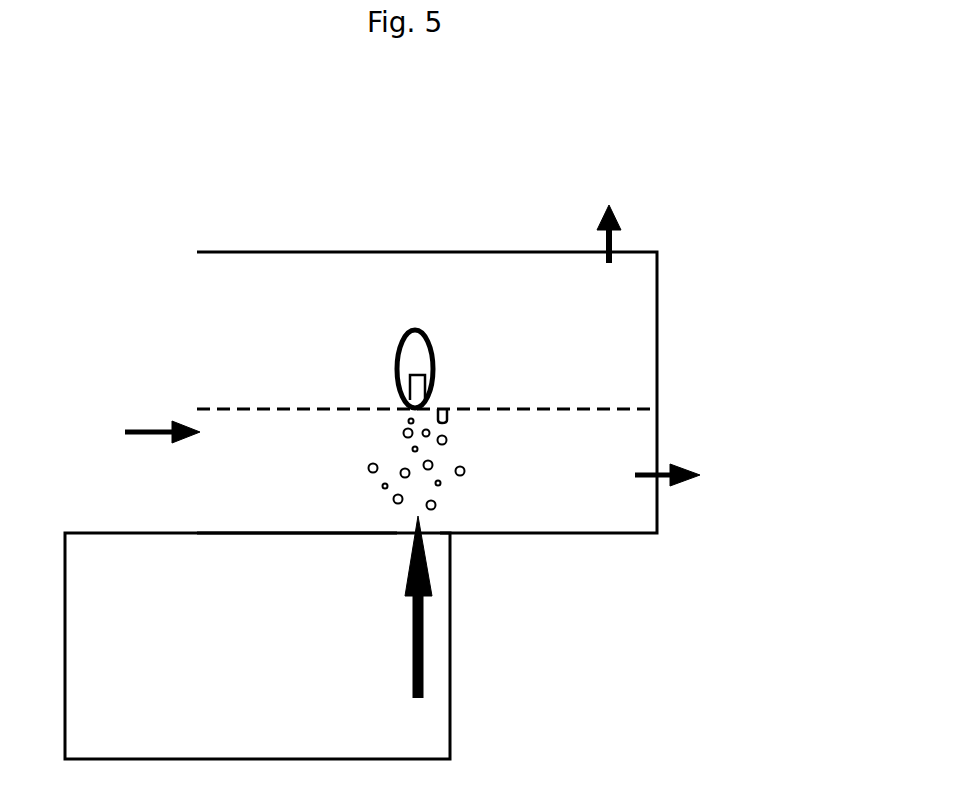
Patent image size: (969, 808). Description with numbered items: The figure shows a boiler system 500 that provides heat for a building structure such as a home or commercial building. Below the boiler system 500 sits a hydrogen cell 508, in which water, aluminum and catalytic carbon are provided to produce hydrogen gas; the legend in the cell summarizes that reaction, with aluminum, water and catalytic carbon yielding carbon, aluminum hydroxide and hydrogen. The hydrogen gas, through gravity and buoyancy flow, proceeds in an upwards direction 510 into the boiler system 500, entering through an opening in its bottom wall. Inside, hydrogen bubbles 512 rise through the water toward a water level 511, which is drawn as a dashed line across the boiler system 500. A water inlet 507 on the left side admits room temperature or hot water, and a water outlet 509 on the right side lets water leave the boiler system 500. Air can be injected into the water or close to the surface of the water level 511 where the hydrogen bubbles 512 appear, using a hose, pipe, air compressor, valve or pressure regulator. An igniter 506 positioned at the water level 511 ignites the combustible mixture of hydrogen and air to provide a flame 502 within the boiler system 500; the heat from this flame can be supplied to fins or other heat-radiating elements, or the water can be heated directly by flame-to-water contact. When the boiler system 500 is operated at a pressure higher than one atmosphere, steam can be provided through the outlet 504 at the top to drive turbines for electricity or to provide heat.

The boiler system 500 is at (195, 315).
The flame 502 is at (400, 338).
The outlet 504 is at (599, 228).
The igniter 506 is at (425, 383).
The water inlet 507 is at (128, 430).
The hydrogen cell 508 is at (157, 530).
The water outlet 509 is at (701, 473).
The upwards direction 510 is at (428, 580).
The water level 511 is at (620, 408).
The hydrogen bubbles 512 is at (440, 484).